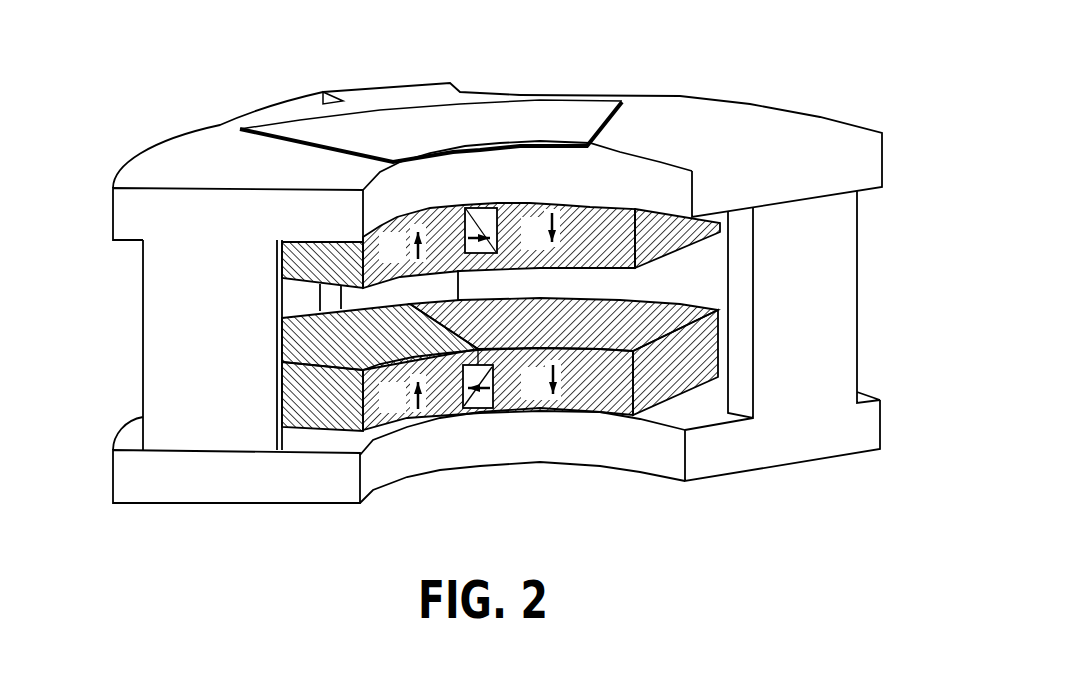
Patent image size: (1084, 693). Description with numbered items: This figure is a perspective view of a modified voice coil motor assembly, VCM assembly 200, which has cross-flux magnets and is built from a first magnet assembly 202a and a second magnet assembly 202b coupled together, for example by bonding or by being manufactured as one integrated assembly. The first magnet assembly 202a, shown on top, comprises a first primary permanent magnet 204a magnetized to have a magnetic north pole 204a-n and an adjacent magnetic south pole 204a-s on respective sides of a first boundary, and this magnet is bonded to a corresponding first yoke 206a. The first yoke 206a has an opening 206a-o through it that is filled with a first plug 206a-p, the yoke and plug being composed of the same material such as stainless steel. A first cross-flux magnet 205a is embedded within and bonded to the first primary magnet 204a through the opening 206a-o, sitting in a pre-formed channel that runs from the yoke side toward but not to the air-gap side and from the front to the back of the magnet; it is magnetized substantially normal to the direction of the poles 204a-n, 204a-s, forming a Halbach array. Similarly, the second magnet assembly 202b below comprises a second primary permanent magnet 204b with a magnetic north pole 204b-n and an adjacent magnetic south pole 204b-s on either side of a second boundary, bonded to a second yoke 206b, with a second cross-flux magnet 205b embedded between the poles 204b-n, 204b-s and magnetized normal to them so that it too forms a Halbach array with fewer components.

The VCM assembly 200 is at (221, 50).
The first magnet assembly 202a is at (763, 130).
The second magnet assembly 202b is at (519, 458).
The first primary permanent magnet 204a is at (577, 210).
The magnetic north pole 204a-n is at (303, 262).
The magnetic south pole 204a-s is at (668, 234).
The second primary permanent magnet 204b is at (593, 408).
The magnetic north pole 204b-n is at (302, 403).
The magnetic south pole 204b-s is at (672, 380).
The first cross-flux magnet 205a is at (477, 210).
The second cross-flux magnet 205b is at (481, 410).
The first yoke 206a is at (232, 176).
The opening 206a-o is at (475, 125).
The first plug 206a-p is at (598, 118).
The second yoke 206b is at (234, 494).